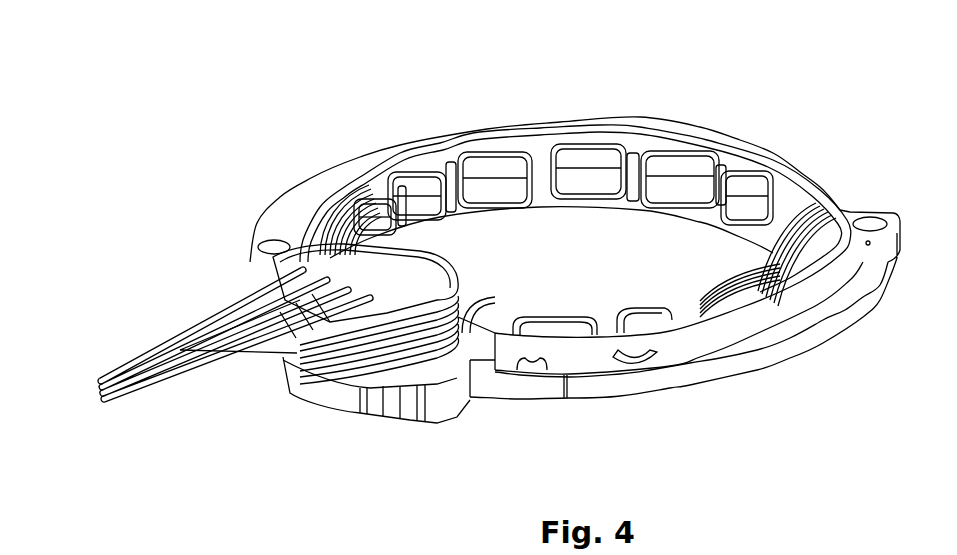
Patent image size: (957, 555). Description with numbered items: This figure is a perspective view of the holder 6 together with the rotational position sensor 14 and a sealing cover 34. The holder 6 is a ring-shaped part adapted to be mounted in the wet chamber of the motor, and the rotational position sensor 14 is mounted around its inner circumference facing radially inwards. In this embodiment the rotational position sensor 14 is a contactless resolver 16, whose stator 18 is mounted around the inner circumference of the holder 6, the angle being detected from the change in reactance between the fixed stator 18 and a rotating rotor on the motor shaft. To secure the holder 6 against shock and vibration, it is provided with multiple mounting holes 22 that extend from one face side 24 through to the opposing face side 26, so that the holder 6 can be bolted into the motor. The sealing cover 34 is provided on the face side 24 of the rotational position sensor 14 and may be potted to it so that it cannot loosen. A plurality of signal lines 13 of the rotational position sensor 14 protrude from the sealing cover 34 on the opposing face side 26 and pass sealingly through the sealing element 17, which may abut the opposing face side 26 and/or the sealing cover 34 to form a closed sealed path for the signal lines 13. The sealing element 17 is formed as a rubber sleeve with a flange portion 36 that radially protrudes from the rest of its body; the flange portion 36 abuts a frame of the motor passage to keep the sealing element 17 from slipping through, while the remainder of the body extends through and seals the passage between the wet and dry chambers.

The holder 6 is at (522, 279).
The signal lines 13 is at (205, 325).
The rotational position sensor 14 is at (453, 138).
The resolver 16 is at (453, 138).
The stator 18 is at (453, 138).
The sealing element 17 is at (372, 362).
The mounting holes 22 is at (870, 225).
The face side 24 is at (800, 372).
The opposing face side 26 is at (863, 265).
The sealing cover 34 is at (443, 400).
The flange portion 36 is at (300, 355).